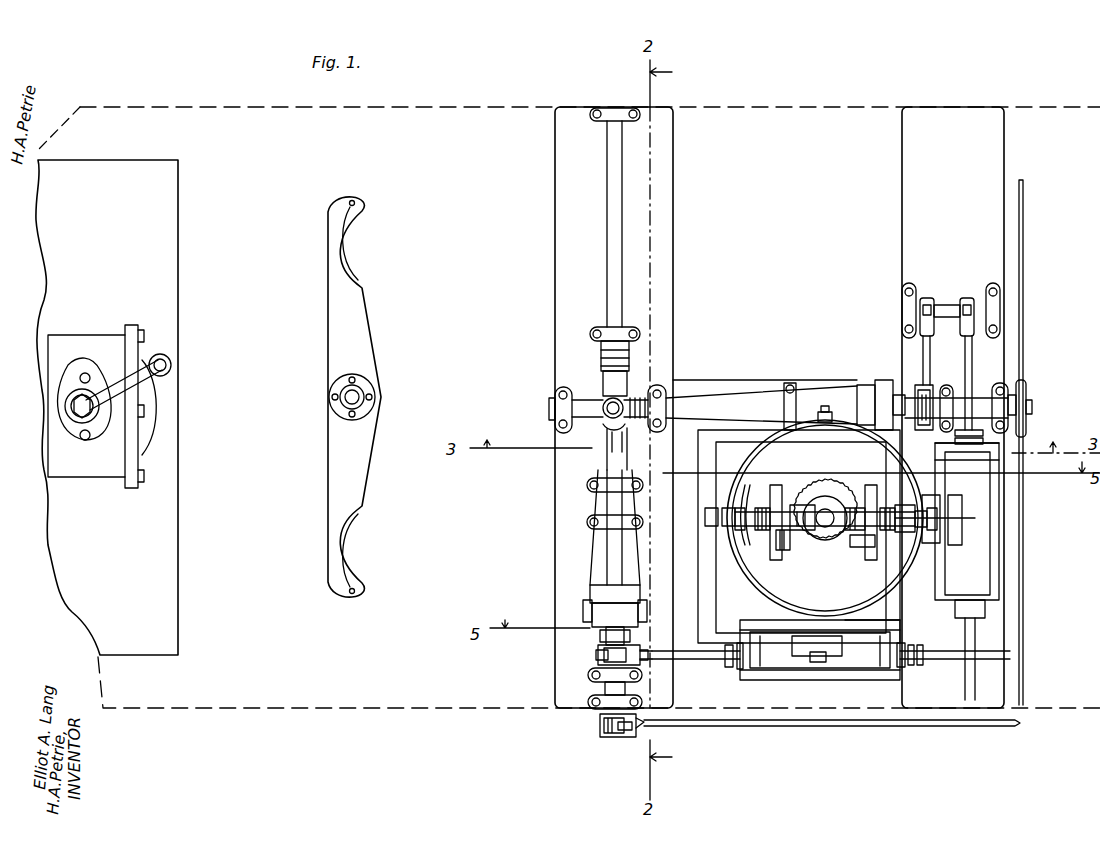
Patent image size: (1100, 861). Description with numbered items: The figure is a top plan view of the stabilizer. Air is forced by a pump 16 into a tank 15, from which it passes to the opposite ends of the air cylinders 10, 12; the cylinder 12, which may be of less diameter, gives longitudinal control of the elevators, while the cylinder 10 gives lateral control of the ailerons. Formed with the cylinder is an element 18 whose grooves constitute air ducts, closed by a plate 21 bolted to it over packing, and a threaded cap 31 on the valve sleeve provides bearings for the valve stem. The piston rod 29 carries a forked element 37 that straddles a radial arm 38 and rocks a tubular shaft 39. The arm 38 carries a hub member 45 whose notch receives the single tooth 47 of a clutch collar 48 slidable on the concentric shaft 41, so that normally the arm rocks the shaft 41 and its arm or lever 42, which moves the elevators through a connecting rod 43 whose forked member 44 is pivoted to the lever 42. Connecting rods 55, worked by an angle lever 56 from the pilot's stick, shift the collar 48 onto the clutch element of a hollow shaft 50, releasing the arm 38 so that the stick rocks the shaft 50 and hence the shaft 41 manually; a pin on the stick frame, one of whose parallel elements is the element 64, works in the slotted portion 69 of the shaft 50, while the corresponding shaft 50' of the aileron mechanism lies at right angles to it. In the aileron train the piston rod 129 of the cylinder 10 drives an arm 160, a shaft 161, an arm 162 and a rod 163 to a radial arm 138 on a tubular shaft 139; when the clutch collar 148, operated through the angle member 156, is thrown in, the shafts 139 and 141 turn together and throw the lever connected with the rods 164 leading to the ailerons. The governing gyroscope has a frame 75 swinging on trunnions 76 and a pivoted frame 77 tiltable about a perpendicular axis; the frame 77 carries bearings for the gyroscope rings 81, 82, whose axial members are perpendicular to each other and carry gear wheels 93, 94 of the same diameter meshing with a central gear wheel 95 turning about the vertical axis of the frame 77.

The air cylinder 10 is at (978, 556).
The air cylinder 12 is at (846, 672).
The tank 15 is at (178, 268).
The pump 16 is at (78, 345).
The element 18 is at (868, 628).
The plate 21 is at (942, 470).
The piston rod 29 is at (688, 663).
The cap 31 is at (810, 655).
The forked element 37 is at (640, 665).
The radial arm 38 is at (600, 662).
The tubular shaft 39 is at (606, 678).
The concentric shaft 41 is at (613, 740).
The arm or lever 42 is at (623, 737).
The connecting rod 43 is at (748, 730).
The forked member 44 is at (668, 730).
The hub member 45 is at (608, 652).
The single tooth 47 is at (630, 634).
The clutch collar 48 is at (615, 613).
The hollow shaft 50 is at (626, 597).
The shaft 50' is at (576, 393).
The connecting wires or rods 55 is at (594, 540).
The angle lever 56 is at (623, 430).
The parallel element 64 is at (620, 382).
The slotted portion 69 is at (630, 388).
The frame of the gyroscope 75 is at (748, 487).
The trunnions 76 is at (708, 512).
The pivoted frame 77 is at (746, 518).
The gyroscope ring 81 is at (776, 500).
The gyroscope ring 82 is at (870, 498).
The gear wheel 93 is at (774, 528).
The gear wheel 94 is at (879, 520).
The central gear wheel 95 is at (821, 508).
The piston rod 129 is at (975, 365).
The radial arm 138 is at (943, 392).
The tubular shaft 139 is at (982, 400).
The shaft 141 is at (1030, 408).
The clutch collar 148 is at (886, 395).
The angle member 156 is at (648, 398).
The arm 160 is at (970, 292).
The shaft 161 is at (950, 302).
The arm 162 is at (927, 292).
The rod 163 is at (931, 368).
The rods 164 is at (1022, 262).